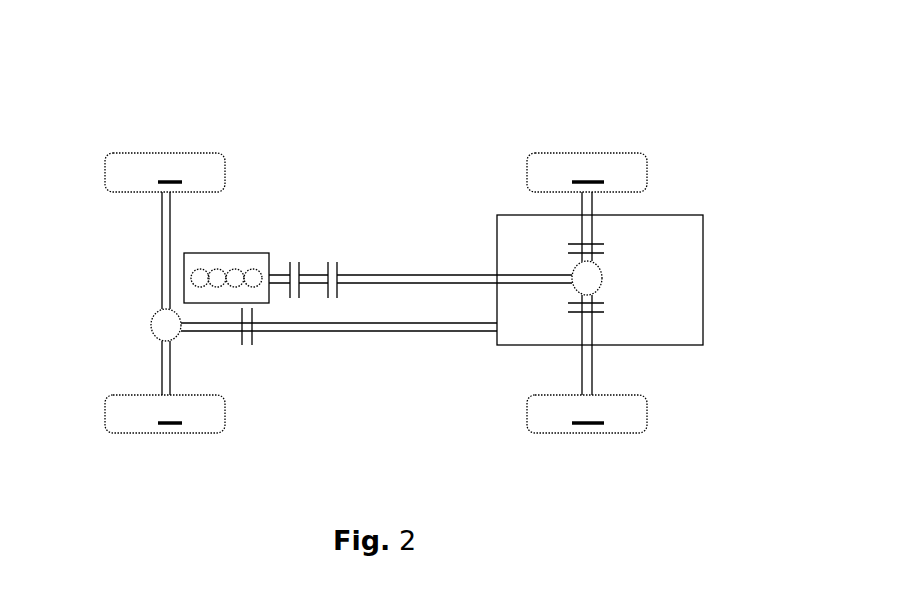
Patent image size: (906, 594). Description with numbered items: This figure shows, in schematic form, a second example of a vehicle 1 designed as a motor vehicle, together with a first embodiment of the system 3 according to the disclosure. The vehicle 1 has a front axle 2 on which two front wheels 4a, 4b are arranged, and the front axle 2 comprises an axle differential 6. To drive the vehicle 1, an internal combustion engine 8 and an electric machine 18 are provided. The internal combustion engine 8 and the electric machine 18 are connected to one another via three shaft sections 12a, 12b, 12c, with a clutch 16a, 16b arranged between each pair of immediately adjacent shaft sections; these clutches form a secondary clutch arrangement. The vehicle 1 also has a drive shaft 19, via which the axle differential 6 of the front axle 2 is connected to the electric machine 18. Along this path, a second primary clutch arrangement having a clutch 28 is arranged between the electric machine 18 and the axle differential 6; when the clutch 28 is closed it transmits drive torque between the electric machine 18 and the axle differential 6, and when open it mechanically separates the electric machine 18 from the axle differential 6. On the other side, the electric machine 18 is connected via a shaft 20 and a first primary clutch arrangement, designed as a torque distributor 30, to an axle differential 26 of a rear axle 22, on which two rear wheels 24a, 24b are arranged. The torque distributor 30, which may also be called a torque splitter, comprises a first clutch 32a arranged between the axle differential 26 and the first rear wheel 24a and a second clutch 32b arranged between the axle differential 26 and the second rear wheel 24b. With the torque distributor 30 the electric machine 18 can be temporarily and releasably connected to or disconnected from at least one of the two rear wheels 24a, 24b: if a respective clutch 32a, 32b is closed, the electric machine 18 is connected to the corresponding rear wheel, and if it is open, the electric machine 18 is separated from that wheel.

The vehicle 1 is at (677, 115).
The front axle 2 is at (160, 246).
The system 3 is at (488, 429).
The front wheel 4a is at (165, 172).
The front wheel 4b is at (165, 414).
The axle differential 6 is at (160, 326).
The internal combustion engine 8 is at (228, 268).
The shaft section 12a is at (282, 271).
The shaft section 12b is at (313, 272).
The shaft section 12c is at (345, 271).
The clutch 16a is at (303, 304).
The clutch 16b is at (338, 304).
The electric machine 18 is at (497, 235).
The drive shaft 19 is at (410, 333).
The shaft 20 is at (437, 286).
The rear axle 22 is at (592, 371).
The rear wheel 24a is at (587, 172).
The rear wheel 24b is at (587, 414).
The axle differential 26 is at (590, 280).
The clutch 28 is at (251, 352).
The torque distributor 30 is at (543, 310).
The first clutch 32a is at (609, 235).
The second clutch 32b is at (613, 313).